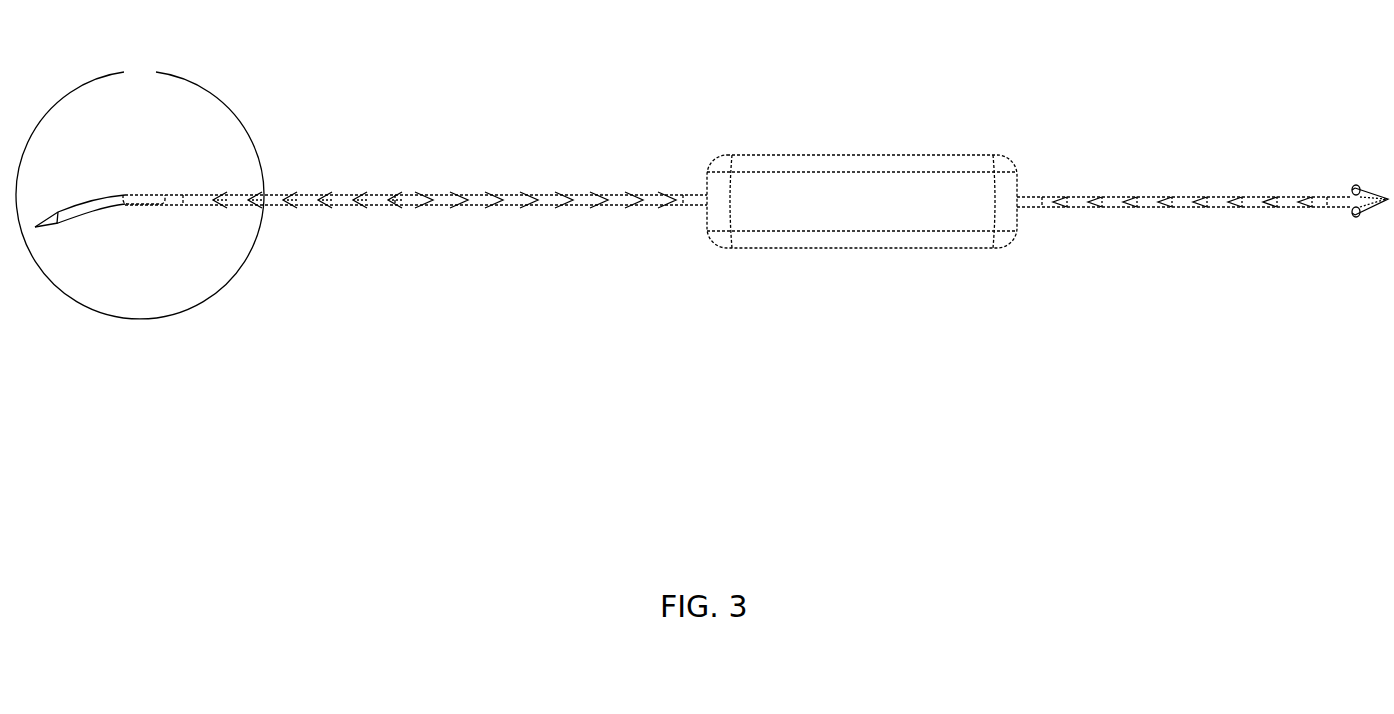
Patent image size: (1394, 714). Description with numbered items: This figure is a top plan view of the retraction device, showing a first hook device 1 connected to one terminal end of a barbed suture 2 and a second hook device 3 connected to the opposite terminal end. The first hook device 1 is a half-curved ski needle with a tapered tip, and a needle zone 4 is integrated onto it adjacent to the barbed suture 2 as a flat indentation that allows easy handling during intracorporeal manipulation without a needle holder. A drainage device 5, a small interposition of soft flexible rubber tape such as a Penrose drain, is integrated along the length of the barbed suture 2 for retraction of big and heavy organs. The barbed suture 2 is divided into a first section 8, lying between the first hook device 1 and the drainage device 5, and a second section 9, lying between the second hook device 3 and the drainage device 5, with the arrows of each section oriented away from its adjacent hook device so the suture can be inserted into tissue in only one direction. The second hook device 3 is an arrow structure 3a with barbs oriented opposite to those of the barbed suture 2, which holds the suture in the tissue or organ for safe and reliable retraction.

The first hook device 1 is at (50, 220).
The barbed suture 2 is at (738, 138).
The second hook device 3 is at (1350, 138).
The arrow structure 3a is at (1342, 198).
The needle zone 4 is at (156, 71).
The drainage device 5 is at (915, 167).
The first section 8 is at (598, 154).
The second section 9 is at (1183, 194).